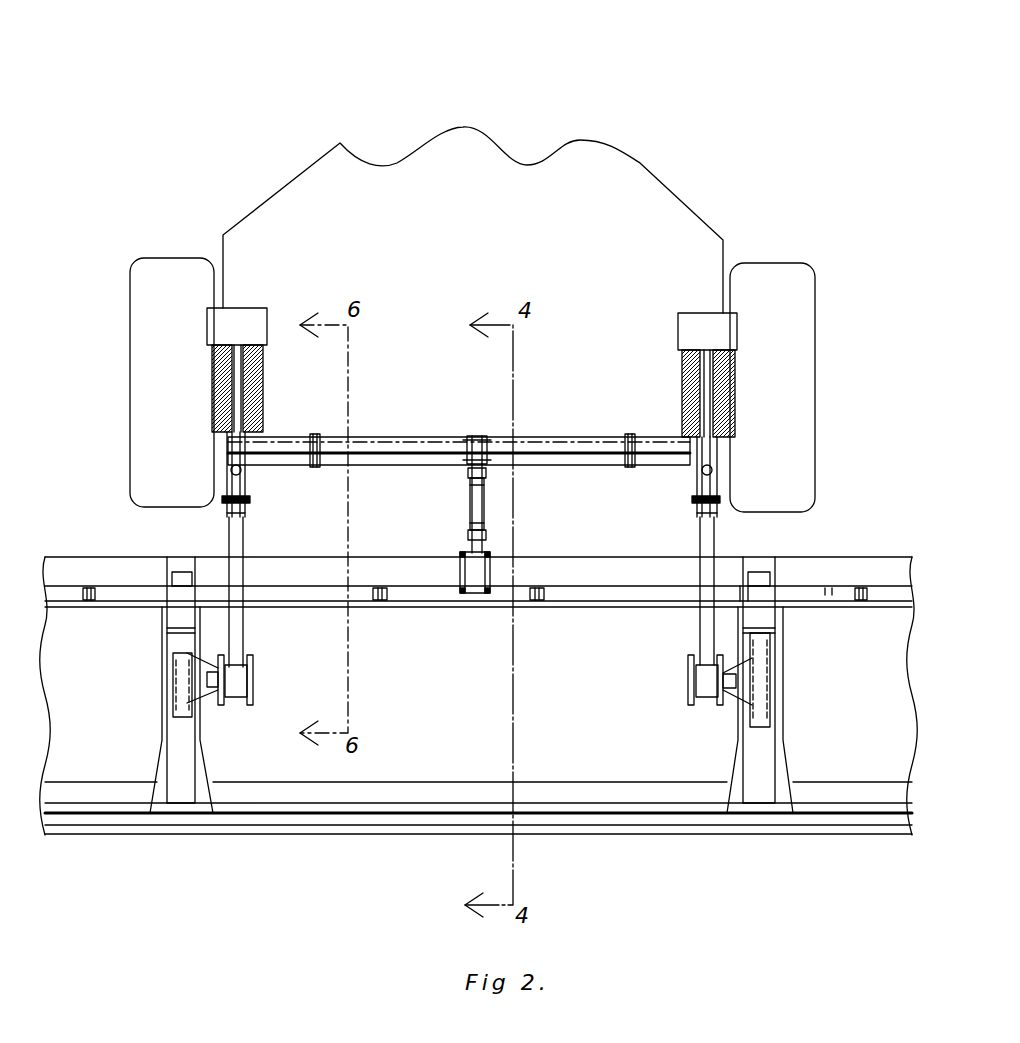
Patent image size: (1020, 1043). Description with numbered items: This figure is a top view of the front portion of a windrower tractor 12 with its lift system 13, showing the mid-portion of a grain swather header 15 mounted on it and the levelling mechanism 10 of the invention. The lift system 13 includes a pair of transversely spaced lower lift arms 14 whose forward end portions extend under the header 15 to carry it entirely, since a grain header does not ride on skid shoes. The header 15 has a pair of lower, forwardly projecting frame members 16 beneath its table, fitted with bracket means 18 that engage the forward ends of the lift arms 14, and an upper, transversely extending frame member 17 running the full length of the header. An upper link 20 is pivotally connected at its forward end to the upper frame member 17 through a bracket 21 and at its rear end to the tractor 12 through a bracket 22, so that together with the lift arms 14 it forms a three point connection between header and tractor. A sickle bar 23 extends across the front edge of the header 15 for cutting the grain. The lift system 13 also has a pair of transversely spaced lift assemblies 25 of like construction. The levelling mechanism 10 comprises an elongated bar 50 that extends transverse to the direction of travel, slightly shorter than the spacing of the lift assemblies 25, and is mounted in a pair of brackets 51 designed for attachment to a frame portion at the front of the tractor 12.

The levelling mechanism 10 is at (415, 482).
The windrower tractor 12 is at (660, 153).
The lift system 13 is at (748, 540).
The lower lift arms 14 is at (252, 623).
The swather header 15 is at (462, 855).
The lower frame members 16 is at (200, 748).
The upper frame member 17 is at (892, 576).
The bracket means 18 is at (710, 692).
The upper link 20 is at (473, 492).
The bracket 21 is at (472, 596).
The bracket 22 is at (470, 440).
The sickle bar 23 is at (588, 838).
The lift assemblies 25 is at (255, 494).
The elongated bar 50 is at (603, 468).
The brackets 51 is at (325, 442).